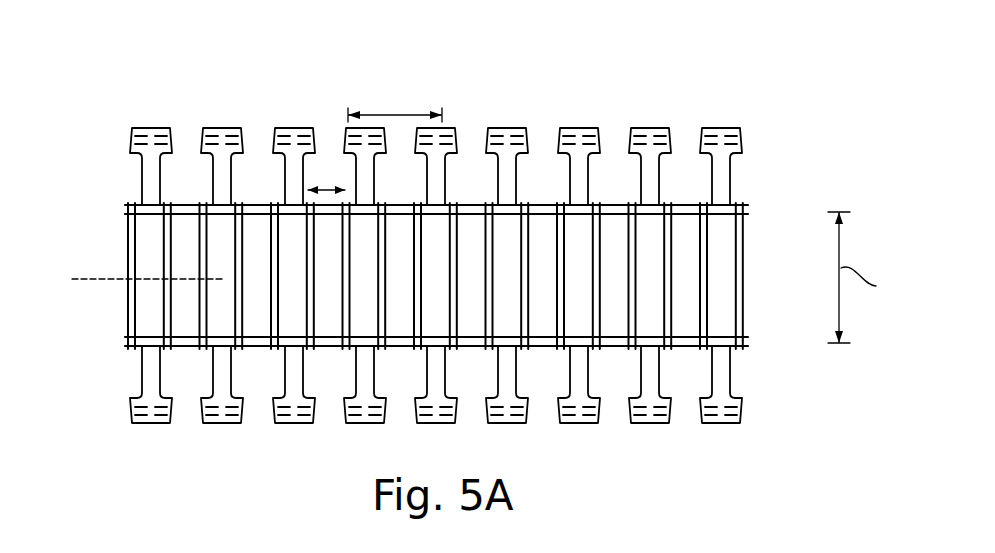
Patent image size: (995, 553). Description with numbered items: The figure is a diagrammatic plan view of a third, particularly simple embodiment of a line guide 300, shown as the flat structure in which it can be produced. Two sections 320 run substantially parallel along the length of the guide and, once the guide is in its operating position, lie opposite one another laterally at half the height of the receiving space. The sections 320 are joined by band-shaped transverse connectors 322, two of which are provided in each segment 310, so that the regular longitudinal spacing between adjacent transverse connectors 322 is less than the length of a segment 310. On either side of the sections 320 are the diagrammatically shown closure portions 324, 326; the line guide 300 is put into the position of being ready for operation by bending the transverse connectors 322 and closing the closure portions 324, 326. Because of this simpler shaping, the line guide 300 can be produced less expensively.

The line guide 300 is at (668, 88).
The segment 310 is at (316, 120).
The sections 320 is at (735, 203).
The transverse connectors 322 is at (738, 268).
The closure portion 324 is at (148, 372).
The closure portion 326 is at (148, 182).